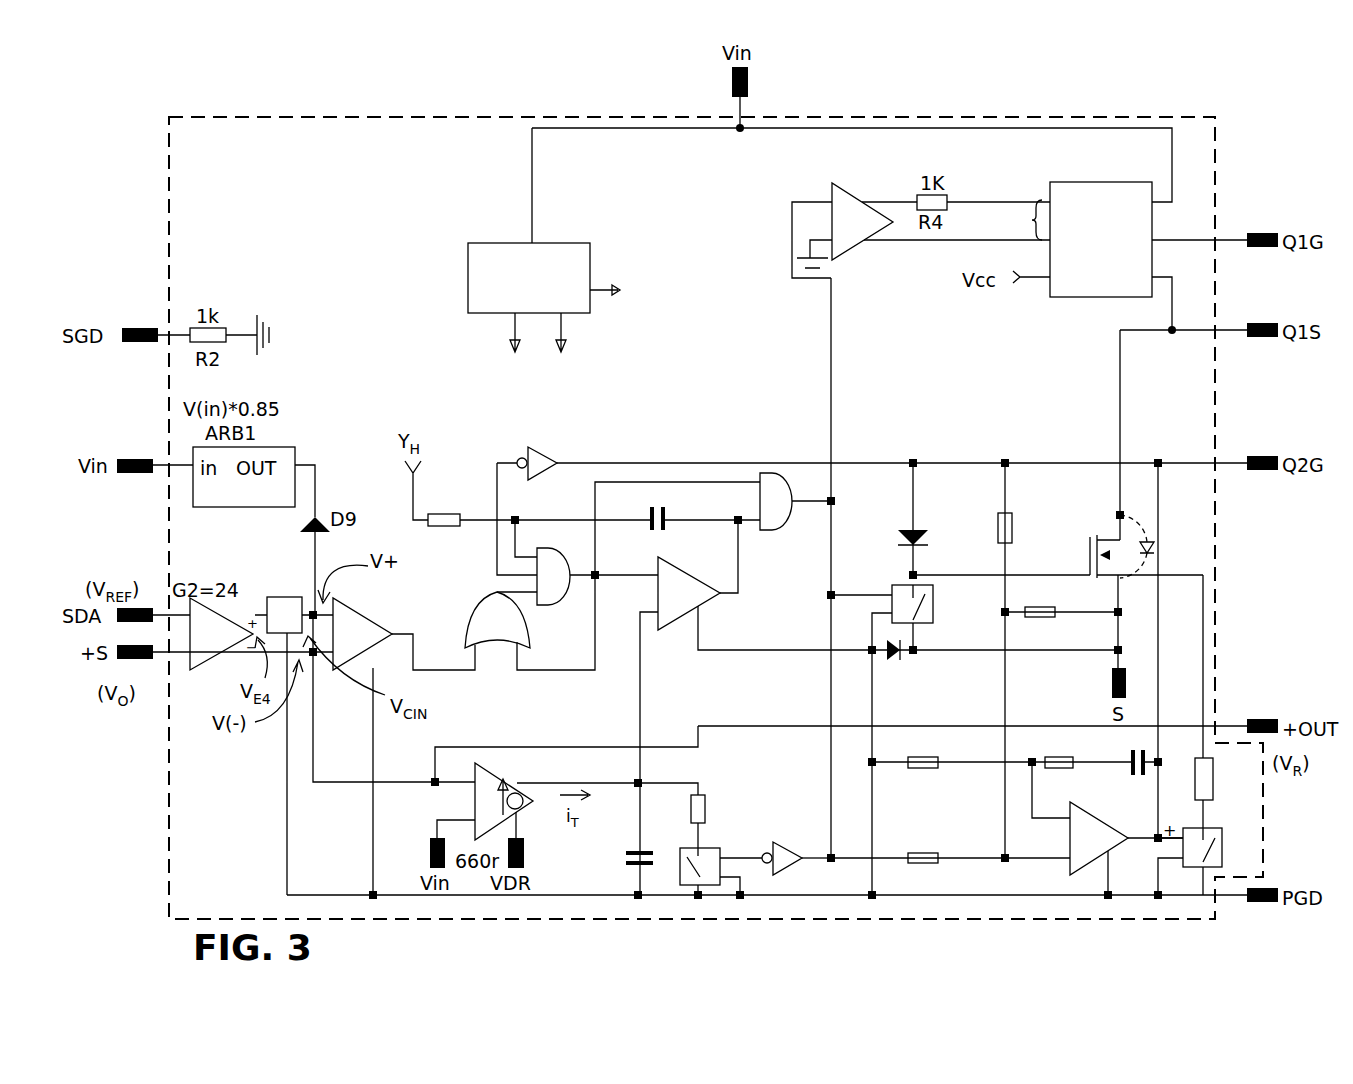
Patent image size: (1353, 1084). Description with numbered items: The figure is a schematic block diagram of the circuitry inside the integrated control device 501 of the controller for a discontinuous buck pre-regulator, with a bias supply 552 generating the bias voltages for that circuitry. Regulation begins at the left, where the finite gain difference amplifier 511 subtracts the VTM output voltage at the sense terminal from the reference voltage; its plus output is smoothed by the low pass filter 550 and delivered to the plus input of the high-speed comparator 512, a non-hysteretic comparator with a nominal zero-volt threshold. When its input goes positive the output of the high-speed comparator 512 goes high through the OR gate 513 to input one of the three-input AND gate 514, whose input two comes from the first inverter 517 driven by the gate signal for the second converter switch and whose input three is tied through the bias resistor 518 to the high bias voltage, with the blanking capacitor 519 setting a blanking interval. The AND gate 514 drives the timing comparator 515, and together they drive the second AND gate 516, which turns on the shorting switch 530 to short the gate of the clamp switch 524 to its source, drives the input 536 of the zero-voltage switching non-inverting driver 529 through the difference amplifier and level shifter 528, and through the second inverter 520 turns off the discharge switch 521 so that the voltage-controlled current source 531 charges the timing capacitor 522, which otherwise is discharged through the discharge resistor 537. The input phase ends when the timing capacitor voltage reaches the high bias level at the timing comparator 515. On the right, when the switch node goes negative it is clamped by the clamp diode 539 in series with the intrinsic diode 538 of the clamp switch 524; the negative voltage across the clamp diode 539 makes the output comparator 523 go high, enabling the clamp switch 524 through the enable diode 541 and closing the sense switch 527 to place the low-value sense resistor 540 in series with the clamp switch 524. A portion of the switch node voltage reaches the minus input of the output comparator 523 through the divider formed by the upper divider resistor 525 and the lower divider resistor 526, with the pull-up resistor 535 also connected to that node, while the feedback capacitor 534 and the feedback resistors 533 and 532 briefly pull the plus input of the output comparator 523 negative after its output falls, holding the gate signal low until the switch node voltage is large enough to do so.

The integrated control device IC1 501 is at (990, 117).
The difference amplifier E4 511 is at (190, 668).
The high-speed comparator U3 512 is at (373, 614).
The OR gate U10 513 is at (527, 644).
The AND gate U5 514 is at (556, 592).
The comparator U1 515 is at (668, 630).
The AND gate U7 516 is at (765, 532).
The inverter U9 517 is at (557, 456).
The resistor R6 518 is at (465, 515).
The capacitor C4 519 is at (670, 512).
The inverter U8 520 is at (797, 872).
The switch S2 521 is at (683, 848).
The timing capacitor C3 522 is at (623, 864).
The comparator U2 523 is at (1067, 860).
The clamp switch Q3 524 is at (1085, 549).
The resistor R17 525 is at (1060, 617).
The resistor R10 526 is at (940, 856).
The switch S1 527 is at (1212, 870).
The difference amplifier/level shifter E1 528 is at (857, 195).
The ZVS-NID driver U4 529 is at (1052, 300).
The switch S3 530 is at (908, 585).
The voltage-controlled current source G1 531 is at (508, 783).
The resistor R1 532 is at (905, 766).
The resistor R3 533 is at (1042, 757).
The capacitor C1 534 is at (1128, 756).
The resistor R16 535 is at (998, 530).
The input to ZVS-NID driver 536 is at (1030, 220).
The resistor R11 537 is at (705, 793).
The intrinsic diode of clamp switch Q3 538 is at (1150, 540).
The diode D10 539 is at (910, 660).
The resistor R20 540 is at (1210, 752).
The diode D5 541 is at (908, 529).
The low pass filter 550 is at (285, 597).
The bias supply 552 is at (548, 243).